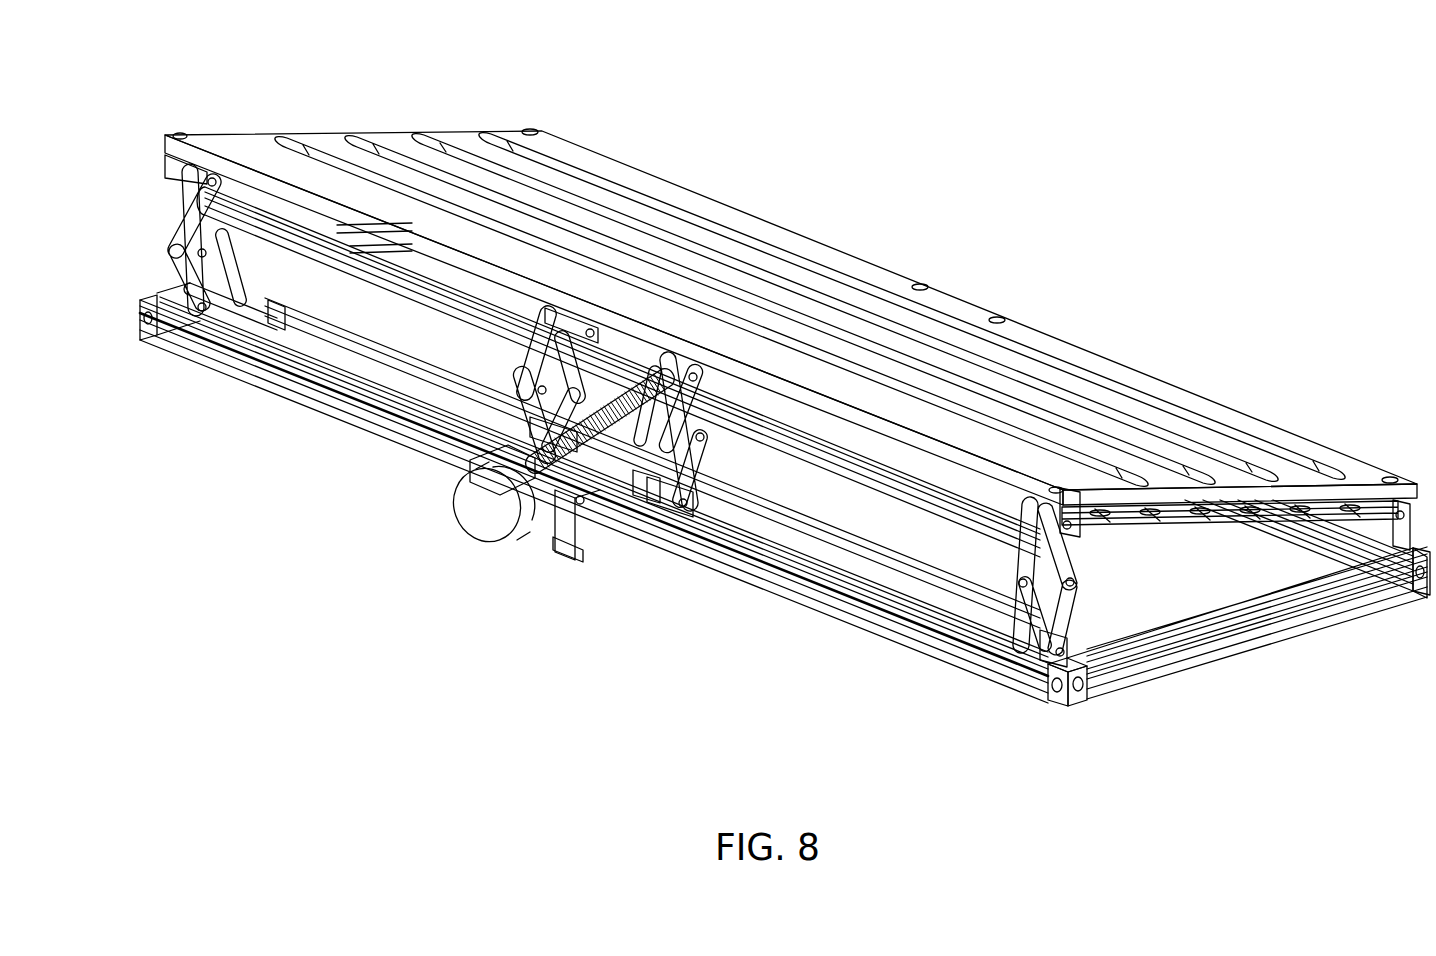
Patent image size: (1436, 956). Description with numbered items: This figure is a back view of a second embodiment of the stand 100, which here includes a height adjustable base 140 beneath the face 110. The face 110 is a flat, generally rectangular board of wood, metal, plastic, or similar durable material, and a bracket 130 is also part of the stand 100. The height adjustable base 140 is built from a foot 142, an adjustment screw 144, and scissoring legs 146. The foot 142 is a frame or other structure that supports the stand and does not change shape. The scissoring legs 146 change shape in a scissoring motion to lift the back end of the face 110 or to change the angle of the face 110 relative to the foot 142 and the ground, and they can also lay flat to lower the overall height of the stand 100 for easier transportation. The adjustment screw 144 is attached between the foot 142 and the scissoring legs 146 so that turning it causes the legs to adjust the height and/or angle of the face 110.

The stand 100 is at (318, 193).
The face 110 is at (380, 162).
The bracket 130 is at (1193, 519).
The height adjustable base 140 is at (472, 460).
The foot 142 is at (757, 563).
The adjustment screw 144 is at (485, 508).
The scissoring legs 146 is at (620, 547).